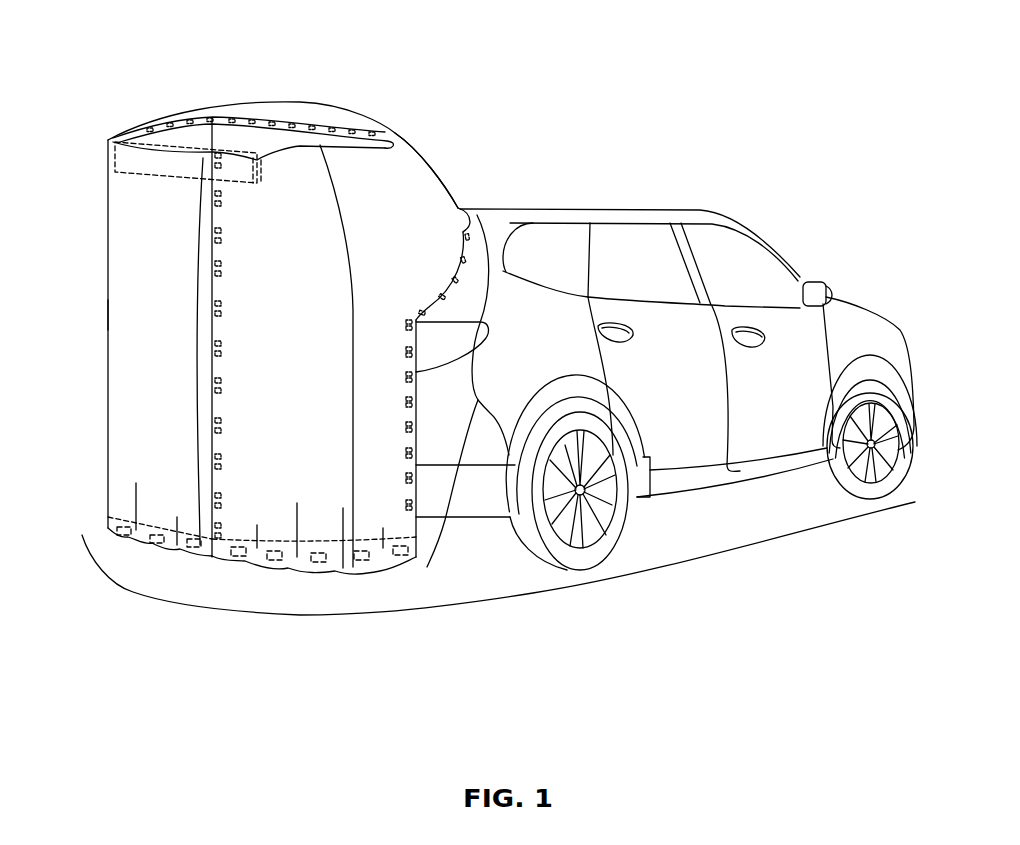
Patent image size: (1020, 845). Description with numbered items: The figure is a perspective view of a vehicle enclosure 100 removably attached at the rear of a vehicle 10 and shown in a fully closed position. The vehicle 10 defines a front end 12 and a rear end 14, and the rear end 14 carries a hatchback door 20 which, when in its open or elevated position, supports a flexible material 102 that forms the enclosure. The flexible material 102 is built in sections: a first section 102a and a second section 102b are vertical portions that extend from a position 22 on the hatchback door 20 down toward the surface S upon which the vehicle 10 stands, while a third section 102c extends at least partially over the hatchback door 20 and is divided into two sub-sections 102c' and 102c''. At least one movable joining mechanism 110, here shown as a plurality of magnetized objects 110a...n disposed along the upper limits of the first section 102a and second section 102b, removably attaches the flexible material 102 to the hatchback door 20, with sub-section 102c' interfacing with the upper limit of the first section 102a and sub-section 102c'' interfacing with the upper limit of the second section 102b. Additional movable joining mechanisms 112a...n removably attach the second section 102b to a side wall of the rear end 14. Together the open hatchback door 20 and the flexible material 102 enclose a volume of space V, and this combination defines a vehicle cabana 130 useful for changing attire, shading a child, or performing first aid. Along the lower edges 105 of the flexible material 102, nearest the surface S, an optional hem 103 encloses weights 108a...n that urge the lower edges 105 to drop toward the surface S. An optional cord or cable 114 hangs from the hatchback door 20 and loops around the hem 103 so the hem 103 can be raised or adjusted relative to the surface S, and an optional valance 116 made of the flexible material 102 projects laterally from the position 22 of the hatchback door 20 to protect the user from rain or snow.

The vehicle 10 is at (666, 352).
The front end 12 is at (807, 259).
The rear end 14 is at (493, 201).
The hatchback door 20 is at (427, 165).
The position on the hatchback door 22 is at (251, 103).
The vehicle enclosure 100 is at (477, 351).
The flexible material 102 is at (251, 414).
The first section 102a is at (363, 530).
The second section 102b is at (126, 339).
The third section 102c is at (283, 111).
The sub-section 102c' is at (283, 143).
The sub-section 102c'' is at (253, 110).
The hem 103 is at (87, 537).
The lower edges 105 is at (167, 546).
The weights 108a...n is at (193, 477).
The movable joining mechanism 110 is at (212, 337).
The magnetized objects 110a...n is at (256, 185).
The movable joining mechanisms 112a...n is at (480, 400).
The cord or cable 114 is at (108, 312).
The valance 116 is at (113, 158).
The vehicle cabana 130 is at (128, 263).
The surface S is at (228, 596).
The volume of space V is at (397, 165).